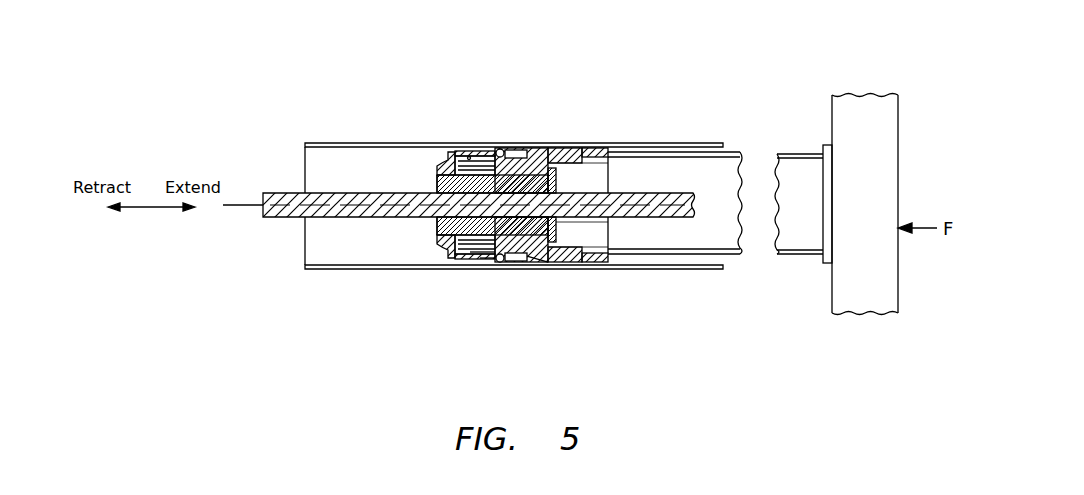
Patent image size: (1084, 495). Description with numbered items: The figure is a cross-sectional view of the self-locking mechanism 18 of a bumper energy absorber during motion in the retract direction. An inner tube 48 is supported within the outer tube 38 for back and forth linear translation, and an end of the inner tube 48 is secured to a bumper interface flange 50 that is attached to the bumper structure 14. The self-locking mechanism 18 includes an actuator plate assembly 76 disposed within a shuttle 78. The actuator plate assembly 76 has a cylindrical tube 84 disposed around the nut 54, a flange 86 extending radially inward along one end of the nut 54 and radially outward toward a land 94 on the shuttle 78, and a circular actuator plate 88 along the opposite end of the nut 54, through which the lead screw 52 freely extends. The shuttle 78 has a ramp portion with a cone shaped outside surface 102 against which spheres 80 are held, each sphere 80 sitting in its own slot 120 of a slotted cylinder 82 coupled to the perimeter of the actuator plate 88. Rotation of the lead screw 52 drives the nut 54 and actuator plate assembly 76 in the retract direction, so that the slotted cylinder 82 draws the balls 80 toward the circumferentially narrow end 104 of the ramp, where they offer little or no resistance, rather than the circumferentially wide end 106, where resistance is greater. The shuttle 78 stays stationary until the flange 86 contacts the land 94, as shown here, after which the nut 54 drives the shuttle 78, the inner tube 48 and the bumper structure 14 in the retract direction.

The bumper structure 14 is at (862, 102).
The self-locking mechanism 18 is at (583, 88).
The outer tube 38 is at (362, 143).
The inner tube 48 is at (735, 152).
The bumper interface flange 50 is at (826, 263).
The lead screw 52 is at (271, 193).
The nut 54 is at (470, 181).
The actuator plate assembly 76 is at (558, 186).
The shuttle 78 is at (615, 189).
The spheres 80 is at (500, 152).
The slotted cylinder 82 is at (484, 148).
The cylindrical tube 84 is at (483, 252).
The flange 86 is at (558, 227).
The actuator plate 88 is at (450, 258).
The land 94 is at (548, 262).
The cone shaped outside surface 102 is at (540, 258).
The circumferentially narrow end 104 is at (488, 250).
The circumferentially wide end 106 is at (540, 157).
The slot 120 is at (469, 156).